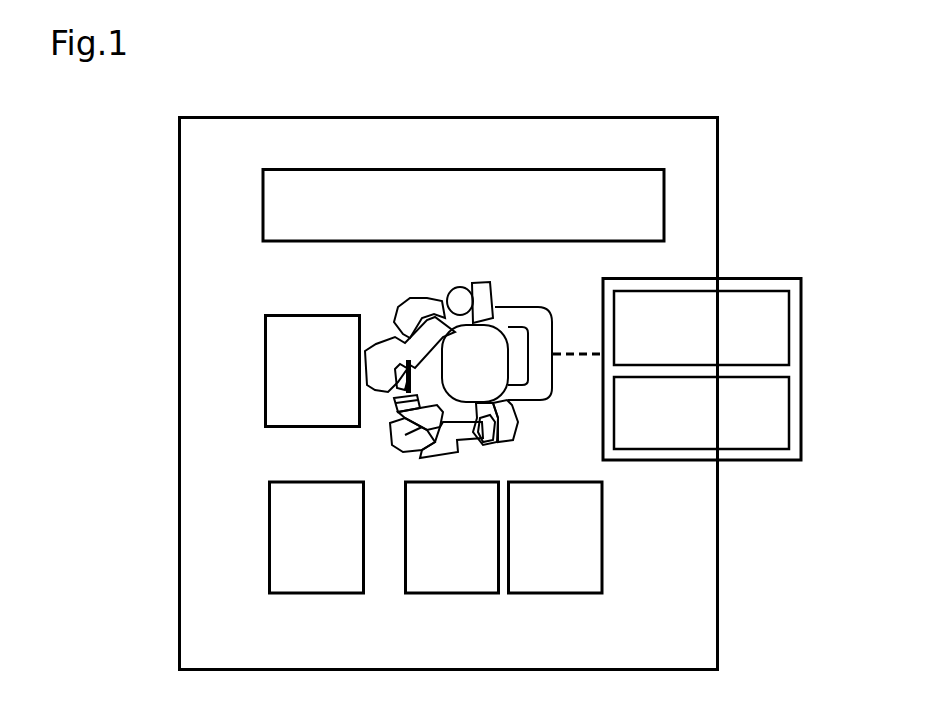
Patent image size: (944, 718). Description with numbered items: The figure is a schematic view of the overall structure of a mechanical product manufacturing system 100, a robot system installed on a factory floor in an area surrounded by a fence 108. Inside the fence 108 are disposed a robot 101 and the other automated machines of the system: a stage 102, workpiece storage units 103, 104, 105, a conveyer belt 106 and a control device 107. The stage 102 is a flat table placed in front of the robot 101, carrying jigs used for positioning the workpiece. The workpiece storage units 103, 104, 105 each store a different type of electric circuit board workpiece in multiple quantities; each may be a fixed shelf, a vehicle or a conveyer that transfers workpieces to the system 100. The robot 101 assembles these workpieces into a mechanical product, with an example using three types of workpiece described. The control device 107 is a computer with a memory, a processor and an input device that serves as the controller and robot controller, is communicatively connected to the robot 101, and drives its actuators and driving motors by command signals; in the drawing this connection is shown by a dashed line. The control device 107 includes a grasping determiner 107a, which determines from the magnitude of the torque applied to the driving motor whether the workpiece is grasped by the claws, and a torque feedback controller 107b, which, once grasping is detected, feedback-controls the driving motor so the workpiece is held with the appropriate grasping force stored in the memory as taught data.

The mechanical product manufacturing system 100 is at (150, 456).
The robot 101 is at (556, 293).
The stage 102 is at (265, 331).
The workpiece storage unit 103 is at (276, 555).
The workpiece storage unit 104 is at (437, 583).
The workpiece storage unit 105 is at (595, 548).
The conveyer belt 106 is at (520, 178).
The control device 107 is at (798, 372).
The grasping determiner 107a is at (701, 328).
The torque feedback controller 107b is at (701, 413).
The fence 108 is at (368, 117).